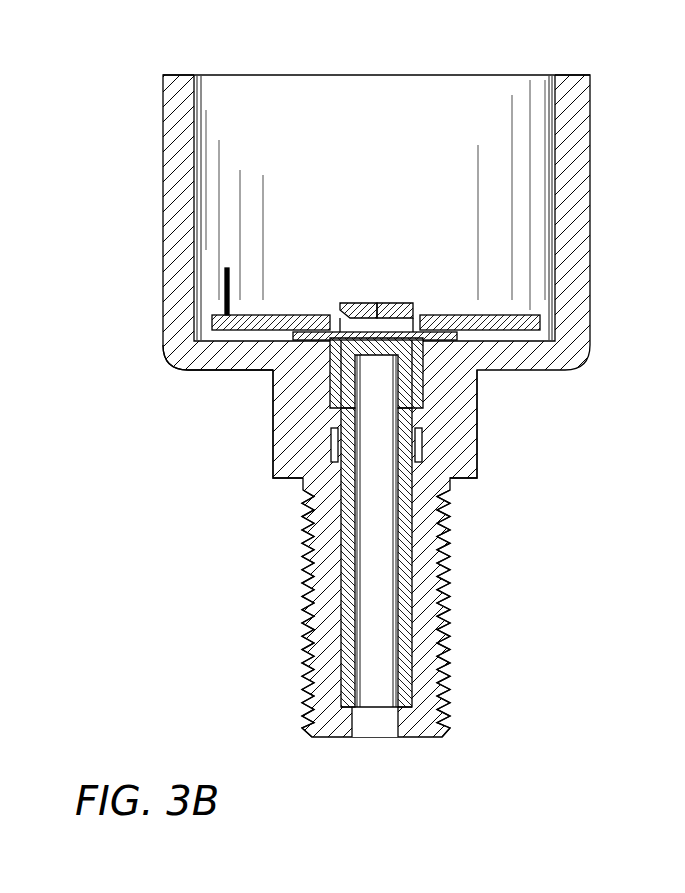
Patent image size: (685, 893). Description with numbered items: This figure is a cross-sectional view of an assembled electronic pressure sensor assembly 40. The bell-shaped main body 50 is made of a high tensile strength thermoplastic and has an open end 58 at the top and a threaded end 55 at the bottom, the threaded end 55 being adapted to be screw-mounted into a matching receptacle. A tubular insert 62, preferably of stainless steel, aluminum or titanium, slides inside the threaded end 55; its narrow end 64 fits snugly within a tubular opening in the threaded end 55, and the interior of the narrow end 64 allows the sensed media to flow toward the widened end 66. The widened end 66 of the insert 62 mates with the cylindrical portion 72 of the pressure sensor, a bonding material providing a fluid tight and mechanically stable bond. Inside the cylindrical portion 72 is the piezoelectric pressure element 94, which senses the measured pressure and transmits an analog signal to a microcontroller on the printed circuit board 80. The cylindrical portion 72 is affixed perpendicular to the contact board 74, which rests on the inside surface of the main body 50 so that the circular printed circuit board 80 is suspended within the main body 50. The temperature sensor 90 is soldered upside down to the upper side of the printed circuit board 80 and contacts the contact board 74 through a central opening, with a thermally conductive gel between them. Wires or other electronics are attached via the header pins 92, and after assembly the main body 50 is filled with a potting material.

The sensor assembly 40 is at (184, 518).
The main body 50 is at (592, 183).
The threaded end 55 is at (320, 684).
The open end 58 is at (185, 74).
The tubular insert 62 is at (345, 500).
The narrow end 64 is at (378, 708).
The widened end 66 is at (345, 420).
The cylindrical portion 72 is at (420, 398).
The contact board 74 is at (268, 368).
The printed circuit board 80 is at (215, 322).
The temperature sensor 90 is at (372, 302).
The header pins 92 is at (222, 280).
The piezoelectric pressure element 94 is at (420, 363).